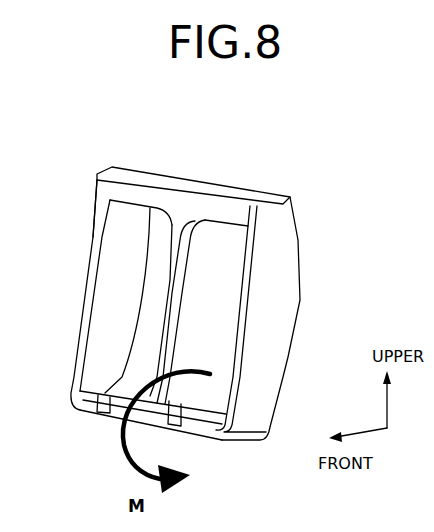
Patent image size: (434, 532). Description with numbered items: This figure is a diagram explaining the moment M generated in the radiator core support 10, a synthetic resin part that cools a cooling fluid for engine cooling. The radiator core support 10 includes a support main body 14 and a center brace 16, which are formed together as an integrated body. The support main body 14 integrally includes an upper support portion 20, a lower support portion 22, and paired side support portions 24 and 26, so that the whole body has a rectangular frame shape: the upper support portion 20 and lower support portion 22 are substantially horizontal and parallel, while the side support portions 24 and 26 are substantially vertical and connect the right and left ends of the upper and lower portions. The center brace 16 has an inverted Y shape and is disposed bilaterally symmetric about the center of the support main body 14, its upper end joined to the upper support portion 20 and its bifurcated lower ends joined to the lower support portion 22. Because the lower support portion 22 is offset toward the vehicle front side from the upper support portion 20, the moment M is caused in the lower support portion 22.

The radiator core support 10 is at (192, 293).
The support main body 14 is at (77, 180).
The center brace 16 is at (205, 296).
The upper support portion 20 is at (182, 182).
The lower support portion 22 is at (192, 430).
The side support portion 24 is at (284, 311).
The side support portion 26 is at (112, 282).